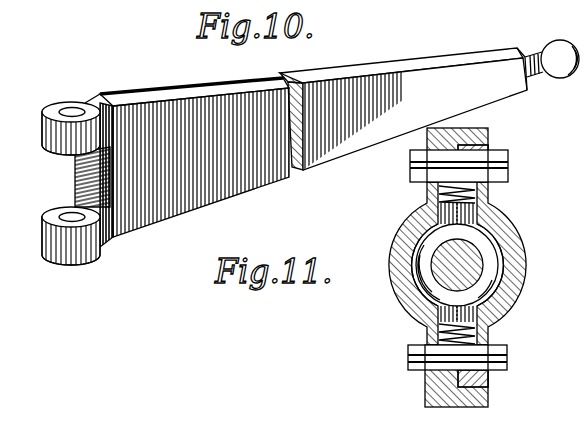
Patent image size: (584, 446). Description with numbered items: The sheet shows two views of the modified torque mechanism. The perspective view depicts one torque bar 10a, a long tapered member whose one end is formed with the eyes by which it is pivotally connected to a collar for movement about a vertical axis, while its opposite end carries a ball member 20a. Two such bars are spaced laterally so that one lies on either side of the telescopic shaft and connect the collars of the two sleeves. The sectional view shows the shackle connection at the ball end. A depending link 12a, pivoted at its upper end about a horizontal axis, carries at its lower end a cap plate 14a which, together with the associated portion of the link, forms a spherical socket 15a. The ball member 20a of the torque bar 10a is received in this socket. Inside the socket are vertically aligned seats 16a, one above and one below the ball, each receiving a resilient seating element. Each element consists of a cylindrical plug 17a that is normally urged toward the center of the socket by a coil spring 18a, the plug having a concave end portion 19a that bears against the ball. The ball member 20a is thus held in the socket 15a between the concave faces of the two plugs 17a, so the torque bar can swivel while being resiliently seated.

In FIG. 10, the torque bar 10a is at (292, 154).
In FIG. 10, the ball member 20a is at (557, 29).
In FIG. 11, the ball member 20a is at (498, 285).
In FIG. 11, the depending link 12a is at (490, 135).
In FIG. 11, the cap plate 14a is at (543, 268).
In FIG. 11, the spherical socket 15a is at (410, 257).
In FIG. 11, the seats 16a is at (433, 193).
In FIG. 11, the cylindrical plug 17a is at (447, 215).
In FIG. 11, the coil spring 18a is at (490, 195).
In FIG. 11, the concave end portion 19a is at (470, 223).